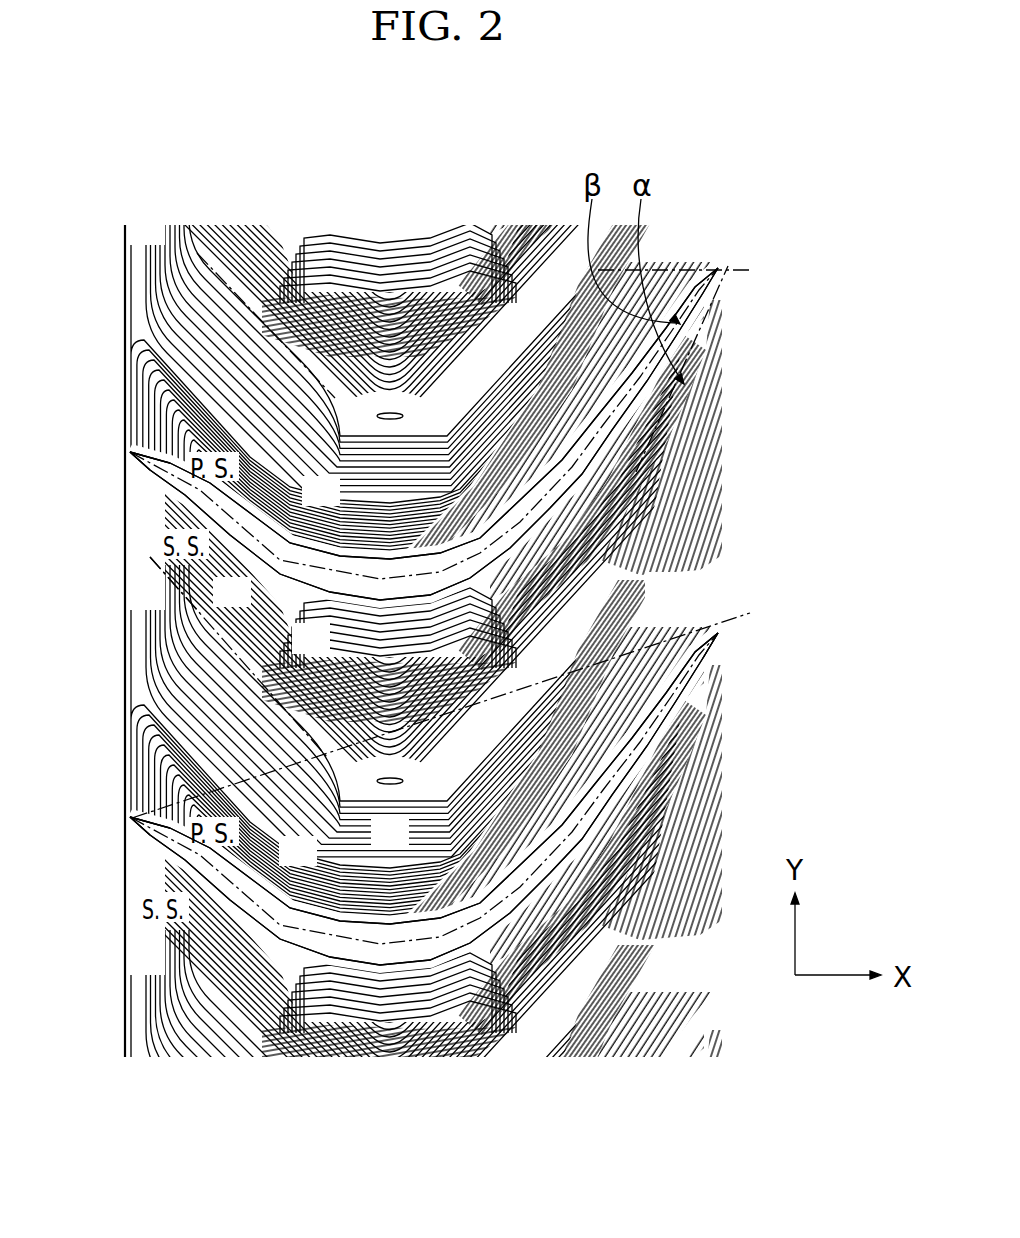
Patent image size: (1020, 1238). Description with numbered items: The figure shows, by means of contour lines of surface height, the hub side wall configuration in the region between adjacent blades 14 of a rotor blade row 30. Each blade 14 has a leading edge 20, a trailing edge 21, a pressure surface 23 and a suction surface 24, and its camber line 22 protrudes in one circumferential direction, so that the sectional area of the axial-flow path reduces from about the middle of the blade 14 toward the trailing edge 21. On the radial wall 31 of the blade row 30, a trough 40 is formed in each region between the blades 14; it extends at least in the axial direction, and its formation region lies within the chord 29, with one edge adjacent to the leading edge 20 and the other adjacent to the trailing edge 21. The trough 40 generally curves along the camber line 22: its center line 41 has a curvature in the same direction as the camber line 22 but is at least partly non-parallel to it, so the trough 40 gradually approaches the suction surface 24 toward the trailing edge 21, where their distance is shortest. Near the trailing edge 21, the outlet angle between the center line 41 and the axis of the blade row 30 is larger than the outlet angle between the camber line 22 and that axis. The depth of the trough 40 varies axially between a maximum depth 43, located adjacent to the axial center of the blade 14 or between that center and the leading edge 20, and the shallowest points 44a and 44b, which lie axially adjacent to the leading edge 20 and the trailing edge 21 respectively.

The blade 14 is at (637, 439).
The leading edge 20 is at (130, 817).
The trailing edge 21 is at (723, 636).
The camber line 22 is at (142, 443).
The pressure surface 23 is at (309, 547).
The suction surface 24 is at (303, 591).
The chord 29 is at (735, 617).
The blade row 30 is at (110, 289).
The radial wall 31 is at (683, 605).
The trough 40 is at (238, 290).
The center line 41 is at (604, 473).
The maximum depth 43 is at (386, 790).
The shallowest point 44a is at (148, 554).
The shallowest point 44b is at (690, 352).